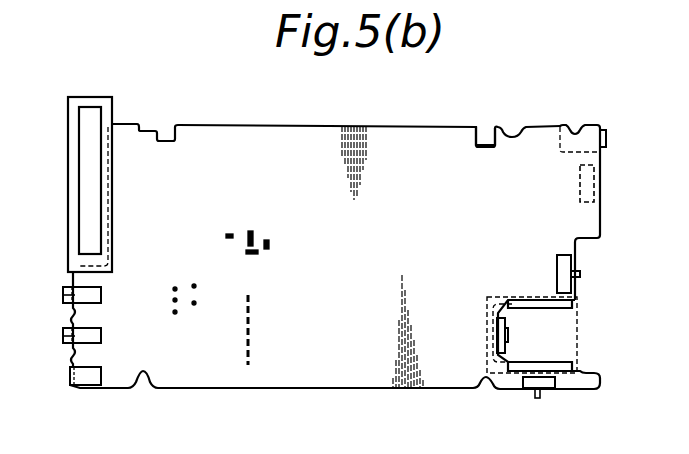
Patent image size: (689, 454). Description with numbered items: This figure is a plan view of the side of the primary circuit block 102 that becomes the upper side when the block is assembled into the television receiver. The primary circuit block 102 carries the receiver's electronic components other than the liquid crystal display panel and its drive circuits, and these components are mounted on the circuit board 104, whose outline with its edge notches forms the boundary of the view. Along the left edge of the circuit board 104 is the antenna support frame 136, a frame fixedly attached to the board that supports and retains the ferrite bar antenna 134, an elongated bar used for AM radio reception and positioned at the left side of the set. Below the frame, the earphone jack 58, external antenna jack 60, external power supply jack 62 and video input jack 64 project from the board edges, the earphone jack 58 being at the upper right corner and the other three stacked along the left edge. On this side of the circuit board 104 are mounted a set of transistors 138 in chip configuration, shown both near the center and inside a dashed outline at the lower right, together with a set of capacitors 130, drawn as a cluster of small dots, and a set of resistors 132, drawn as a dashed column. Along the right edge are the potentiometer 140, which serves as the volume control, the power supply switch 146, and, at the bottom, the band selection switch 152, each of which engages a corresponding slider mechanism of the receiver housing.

The primary circuit block 102 is at (368, 115).
The circuit board 104 is at (458, 143).
The earphone jack 58 is at (583, 127).
The external antenna jack 60 is at (64, 299).
The external power supply jack 62 is at (87, 377).
The video input jack 64 is at (64, 340).
The set of capacitors 130 is at (175, 316).
The set of resistors 132 is at (251, 362).
The ferrite bar antenna 134 is at (94, 123).
The antenna support frame 136 is at (72, 133).
The set of transistors 138 is at (253, 232).
The potentiometer 140 is at (594, 193).
The power supply switch 146 is at (575, 265).
The band selection switch 152 is at (530, 382).